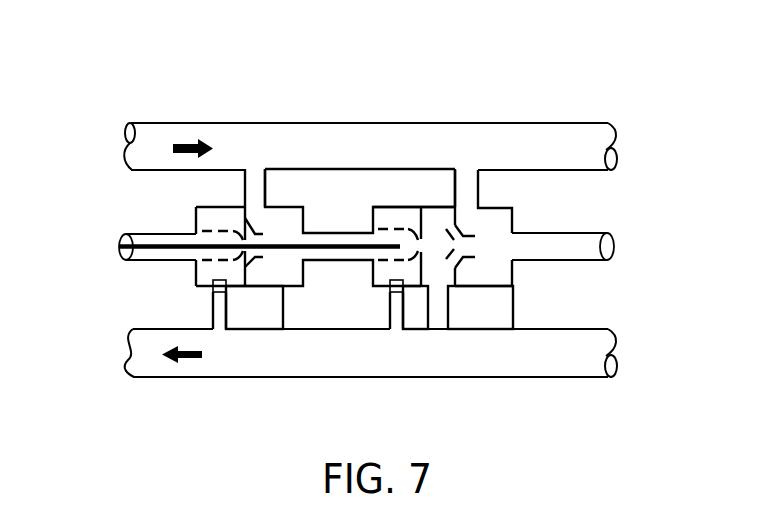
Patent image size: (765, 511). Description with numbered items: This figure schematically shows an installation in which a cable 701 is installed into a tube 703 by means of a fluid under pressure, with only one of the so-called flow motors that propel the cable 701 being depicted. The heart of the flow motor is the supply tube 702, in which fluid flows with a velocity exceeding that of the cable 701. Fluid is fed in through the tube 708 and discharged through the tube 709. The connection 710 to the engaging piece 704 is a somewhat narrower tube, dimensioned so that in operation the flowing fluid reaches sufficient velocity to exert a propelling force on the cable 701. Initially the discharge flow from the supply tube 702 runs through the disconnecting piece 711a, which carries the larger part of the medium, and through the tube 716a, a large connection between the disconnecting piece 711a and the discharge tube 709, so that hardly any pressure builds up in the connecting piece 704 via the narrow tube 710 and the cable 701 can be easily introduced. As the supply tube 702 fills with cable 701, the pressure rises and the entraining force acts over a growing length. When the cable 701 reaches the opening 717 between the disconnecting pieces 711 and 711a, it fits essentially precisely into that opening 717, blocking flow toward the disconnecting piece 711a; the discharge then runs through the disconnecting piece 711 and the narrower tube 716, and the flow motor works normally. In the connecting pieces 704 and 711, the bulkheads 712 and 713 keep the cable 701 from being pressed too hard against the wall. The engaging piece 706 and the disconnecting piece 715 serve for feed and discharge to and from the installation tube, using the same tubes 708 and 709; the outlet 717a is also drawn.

The cable 701 is at (118, 243).
The supply tube 702 is at (332, 233).
The tube 703 is at (137, 262).
The engaging piece 704 is at (284, 286).
The engaging piece 706 is at (490, 208).
The tube 708 is at (178, 123).
The tube 709 is at (217, 378).
The connection 710 is at (245, 205).
The disconnecting piece 711 is at (389, 207).
The disconnecting piece 711a is at (442, 207).
The bulkhead 712 is at (260, 233).
The bulkhead 713 is at (392, 262).
The disconnecting piece 715 is at (203, 205).
The tube 716 is at (403, 307).
The tube 716a is at (448, 307).
The opening 717 is at (421, 247).
The outlet tube 717a is at (458, 245).